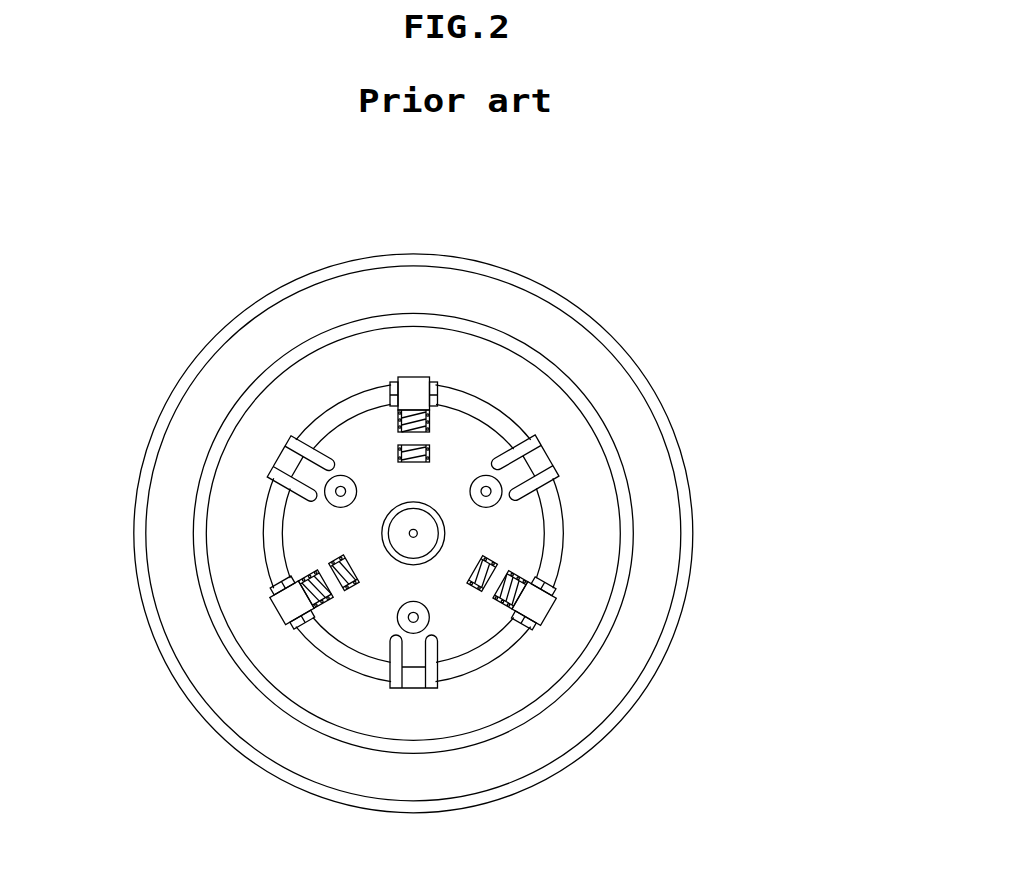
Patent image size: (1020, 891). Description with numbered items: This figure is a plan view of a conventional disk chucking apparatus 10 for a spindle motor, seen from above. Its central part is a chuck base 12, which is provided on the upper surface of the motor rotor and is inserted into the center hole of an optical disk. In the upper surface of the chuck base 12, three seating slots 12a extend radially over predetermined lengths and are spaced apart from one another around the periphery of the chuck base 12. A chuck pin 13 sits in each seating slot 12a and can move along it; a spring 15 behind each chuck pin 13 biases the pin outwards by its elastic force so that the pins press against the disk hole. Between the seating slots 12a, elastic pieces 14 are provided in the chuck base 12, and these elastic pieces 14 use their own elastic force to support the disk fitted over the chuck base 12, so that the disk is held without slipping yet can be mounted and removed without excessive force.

The disk chucking apparatus 10 is at (196, 202).
The chuck base 12 is at (357, 630).
The seating slot 12a is at (537, 577).
The chuck pin 13 is at (533, 605).
The elastic piece 14 is at (413, 680).
The spring 15 is at (530, 585).